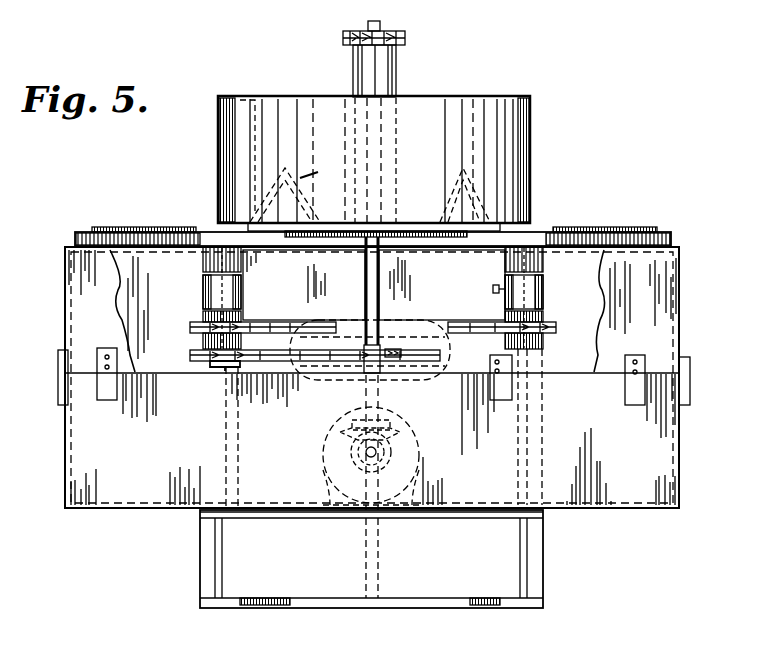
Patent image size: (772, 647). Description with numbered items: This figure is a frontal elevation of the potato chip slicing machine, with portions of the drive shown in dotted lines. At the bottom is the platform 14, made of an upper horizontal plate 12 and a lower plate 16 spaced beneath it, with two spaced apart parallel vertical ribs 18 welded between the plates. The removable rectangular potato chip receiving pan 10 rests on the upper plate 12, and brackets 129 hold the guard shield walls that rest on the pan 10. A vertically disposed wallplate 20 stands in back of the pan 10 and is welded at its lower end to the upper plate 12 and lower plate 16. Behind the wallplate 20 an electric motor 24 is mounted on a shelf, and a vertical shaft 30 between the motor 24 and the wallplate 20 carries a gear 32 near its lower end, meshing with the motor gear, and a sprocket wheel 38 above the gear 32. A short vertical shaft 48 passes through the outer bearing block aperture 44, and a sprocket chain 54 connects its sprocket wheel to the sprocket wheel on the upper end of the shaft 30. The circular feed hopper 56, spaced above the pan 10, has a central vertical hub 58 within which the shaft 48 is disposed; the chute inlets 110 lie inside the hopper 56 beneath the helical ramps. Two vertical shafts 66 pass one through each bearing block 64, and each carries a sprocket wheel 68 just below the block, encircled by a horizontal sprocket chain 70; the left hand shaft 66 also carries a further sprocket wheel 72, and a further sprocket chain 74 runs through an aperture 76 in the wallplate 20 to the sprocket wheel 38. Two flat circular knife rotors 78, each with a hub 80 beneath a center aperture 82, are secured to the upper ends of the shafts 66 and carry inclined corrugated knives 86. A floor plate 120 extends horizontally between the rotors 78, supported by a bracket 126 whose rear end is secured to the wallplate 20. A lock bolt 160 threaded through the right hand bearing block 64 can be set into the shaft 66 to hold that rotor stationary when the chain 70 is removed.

The potato chip receiving pan 10 is at (84, 426).
The upper horizontal plate 12 is at (262, 513).
The platform 14 is at (165, 567).
The lower plate 16 is at (290, 603).
The vertical ribs 18 is at (222, 568).
The wallplate 20 is at (400, 584).
The electric motor 24 is at (414, 437).
The vertical shaft 30 is at (385, 364).
The gear 32 is at (392, 420).
The sprocket wheel 38 is at (400, 354).
The outer bearing block aperture 44 is at (397, 84).
The short vertical shaft 48 is at (382, 26).
The sprocket chain 54 is at (406, 40).
The feed hopper 56 is at (531, 118).
The vertical hub 58 is at (386, 131).
The bearing block 64 is at (241, 300).
The vertical shafts 66 is at (226, 284).
The sprocket wheel 68 is at (241, 319).
The sprocket chain 70 is at (290, 324).
The further sprocket wheel 72 is at (201, 341).
The further sprocket chain 74 is at (346, 380).
The aperture 76 is at (456, 366).
The knife rotors 78 is at (78, 236).
The hub 80 is at (203, 262).
The center aperture 82 is at (214, 230).
The corrugated knives 86 is at (122, 226).
The inlet 110 is at (492, 184).
The floor plate 120 is at (470, 232).
The bracket 126 is at (365, 298).
The brackets 129 is at (70, 403).
The lock bolt 160 is at (493, 289).